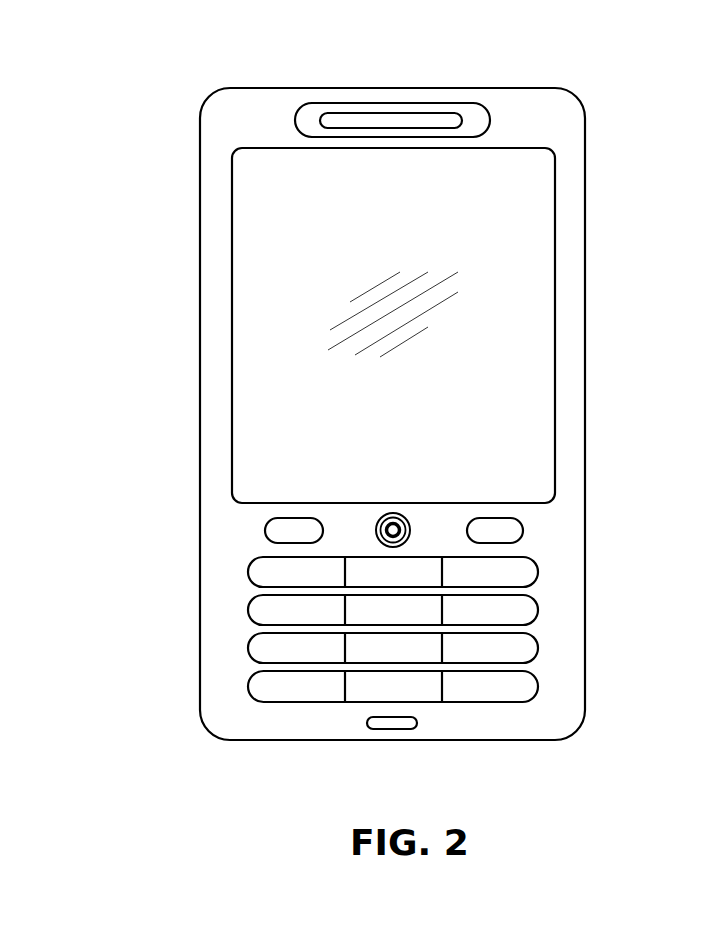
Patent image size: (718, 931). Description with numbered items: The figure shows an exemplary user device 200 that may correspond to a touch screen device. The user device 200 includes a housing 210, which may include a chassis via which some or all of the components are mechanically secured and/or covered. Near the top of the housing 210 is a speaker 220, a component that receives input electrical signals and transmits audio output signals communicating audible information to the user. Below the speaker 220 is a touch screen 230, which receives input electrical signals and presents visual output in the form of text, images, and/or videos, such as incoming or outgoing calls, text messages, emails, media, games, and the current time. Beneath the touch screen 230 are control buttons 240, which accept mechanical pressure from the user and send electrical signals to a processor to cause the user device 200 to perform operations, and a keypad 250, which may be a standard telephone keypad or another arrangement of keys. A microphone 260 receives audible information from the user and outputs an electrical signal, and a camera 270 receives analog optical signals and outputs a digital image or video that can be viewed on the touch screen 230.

The user device 200 is at (218, 55).
The housing 210 is at (200, 196).
The speaker 220 is at (490, 121).
The touch screen 230 is at (530, 265).
The control buttons 240 is at (538, 514).
The keypad 250 is at (550, 690).
The microphone 260 is at (396, 729).
The camera 270 is at (376, 523).